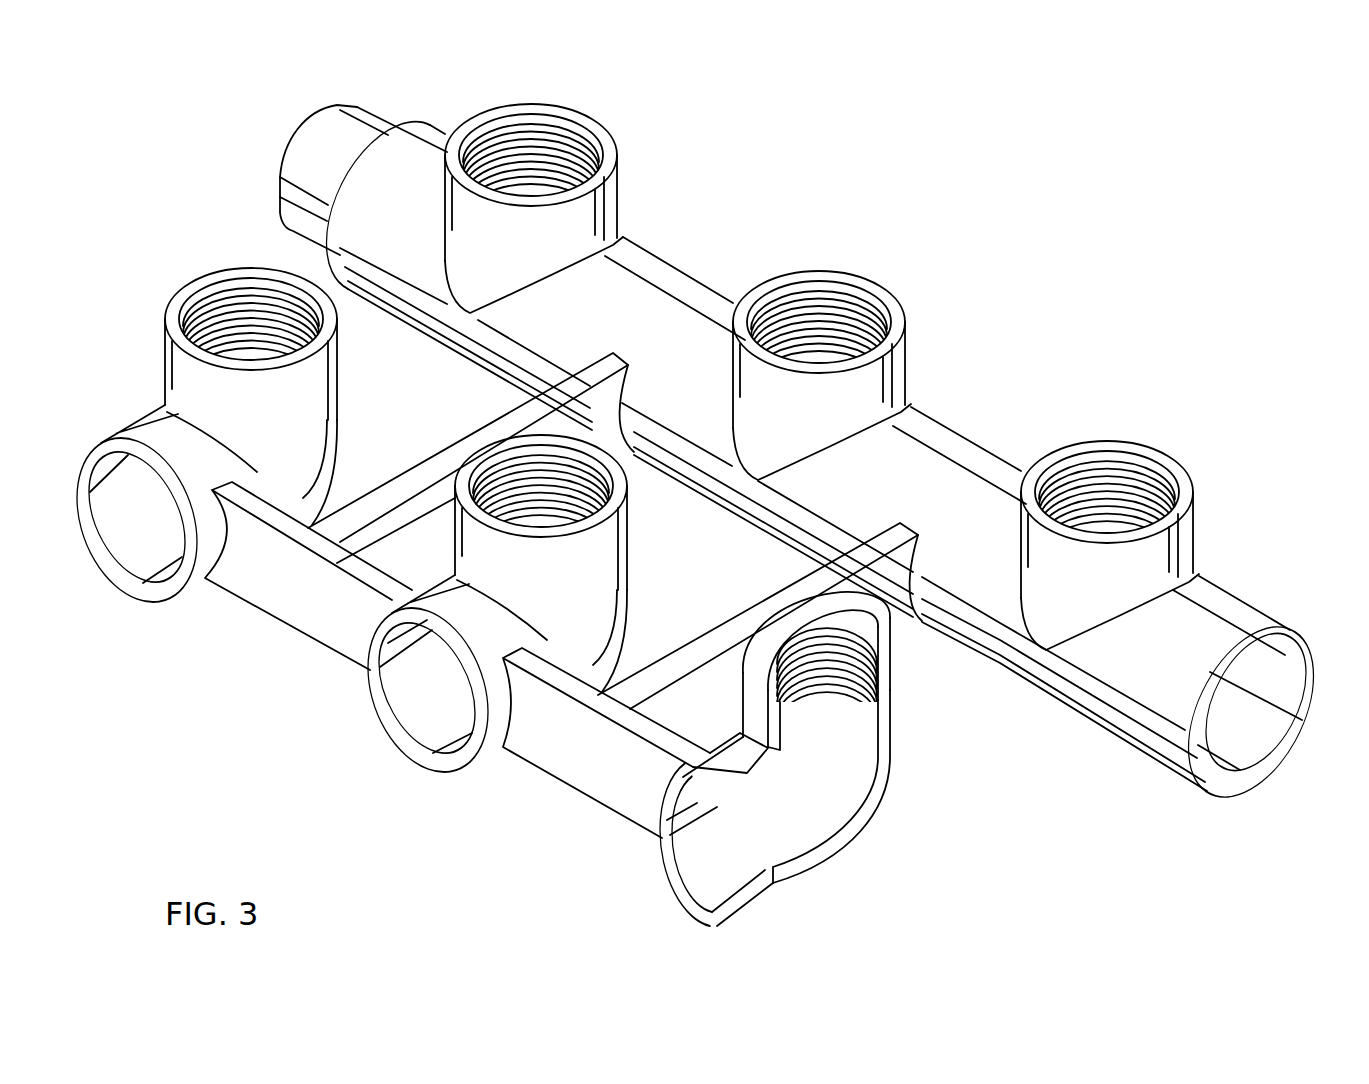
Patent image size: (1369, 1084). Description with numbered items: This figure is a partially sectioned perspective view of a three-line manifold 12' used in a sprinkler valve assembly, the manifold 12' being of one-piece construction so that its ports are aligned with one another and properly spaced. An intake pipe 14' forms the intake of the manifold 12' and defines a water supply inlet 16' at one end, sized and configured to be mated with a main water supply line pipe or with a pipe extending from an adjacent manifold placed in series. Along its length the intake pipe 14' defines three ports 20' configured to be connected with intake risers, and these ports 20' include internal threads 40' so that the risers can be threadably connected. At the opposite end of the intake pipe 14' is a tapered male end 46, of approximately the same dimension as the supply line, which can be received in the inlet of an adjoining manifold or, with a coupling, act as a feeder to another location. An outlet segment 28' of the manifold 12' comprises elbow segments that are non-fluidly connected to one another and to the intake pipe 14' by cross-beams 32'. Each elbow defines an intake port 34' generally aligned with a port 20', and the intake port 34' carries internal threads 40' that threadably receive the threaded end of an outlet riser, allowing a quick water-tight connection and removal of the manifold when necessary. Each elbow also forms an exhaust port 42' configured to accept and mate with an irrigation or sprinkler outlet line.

The three-line manifold 12' is at (884, 328).
The intake pipe 14' is at (808, 447).
The water supply inlet 16' is at (1279, 712).
The port 20' is at (639, 484).
The outlet segment 28' is at (609, 659).
The cross-beam 32' is at (546, 595).
The intake port 34' is at (232, 307).
The internal threads 40' is at (959, 577).
The exhaust port 42' is at (403, 672).
The male end 46 is at (340, 116).